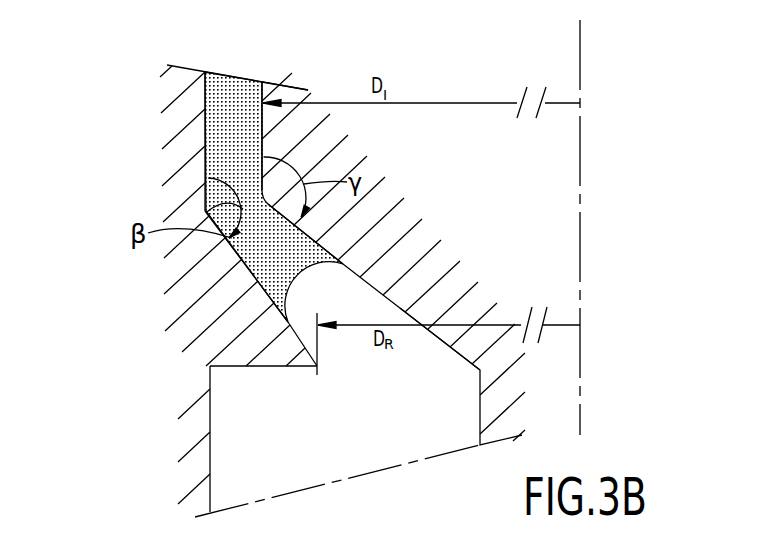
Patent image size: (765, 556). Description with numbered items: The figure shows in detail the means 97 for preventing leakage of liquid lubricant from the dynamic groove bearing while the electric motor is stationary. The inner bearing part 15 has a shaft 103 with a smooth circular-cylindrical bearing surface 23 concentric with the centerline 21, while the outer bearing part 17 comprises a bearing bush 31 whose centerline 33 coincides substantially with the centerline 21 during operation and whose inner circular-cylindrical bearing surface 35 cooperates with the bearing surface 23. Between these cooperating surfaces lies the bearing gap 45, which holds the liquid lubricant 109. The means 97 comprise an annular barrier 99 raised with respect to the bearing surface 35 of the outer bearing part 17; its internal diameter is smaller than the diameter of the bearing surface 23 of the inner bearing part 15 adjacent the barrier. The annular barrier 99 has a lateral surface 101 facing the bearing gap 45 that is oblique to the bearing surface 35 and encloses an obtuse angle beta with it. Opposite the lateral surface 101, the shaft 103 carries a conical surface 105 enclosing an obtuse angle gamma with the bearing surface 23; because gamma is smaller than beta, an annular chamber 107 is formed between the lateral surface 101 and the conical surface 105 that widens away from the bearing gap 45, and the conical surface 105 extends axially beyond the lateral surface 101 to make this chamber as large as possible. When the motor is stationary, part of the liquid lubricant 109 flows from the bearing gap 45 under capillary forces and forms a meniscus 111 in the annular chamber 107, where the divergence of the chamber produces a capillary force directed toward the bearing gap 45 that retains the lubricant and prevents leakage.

The outer bearing part 17 is at (210, 195).
The bearing bush 31 is at (181, 68).
The bearing gap 45 is at (226, 82).
The inner bearing part 15 is at (318, 68).
The shaft 103 is at (286, 90).
The bearing surface 23 is at (264, 157).
The meniscus 111 is at (345, 226).
The annular chamber 107 is at (390, 296).
The conical surface 105 is at (400, 292).
The centerline 21 is at (626, 227).
The centerline 33 is at (582, 202).
The bearing surface 35 is at (221, 180).
The liquid lubricant 109 is at (215, 226).
The lateral surface 101 is at (255, 277).
The annular barrier 99 is at (257, 347).
The means for preventing leakage of liquid lubricant 97 is at (100, 402).